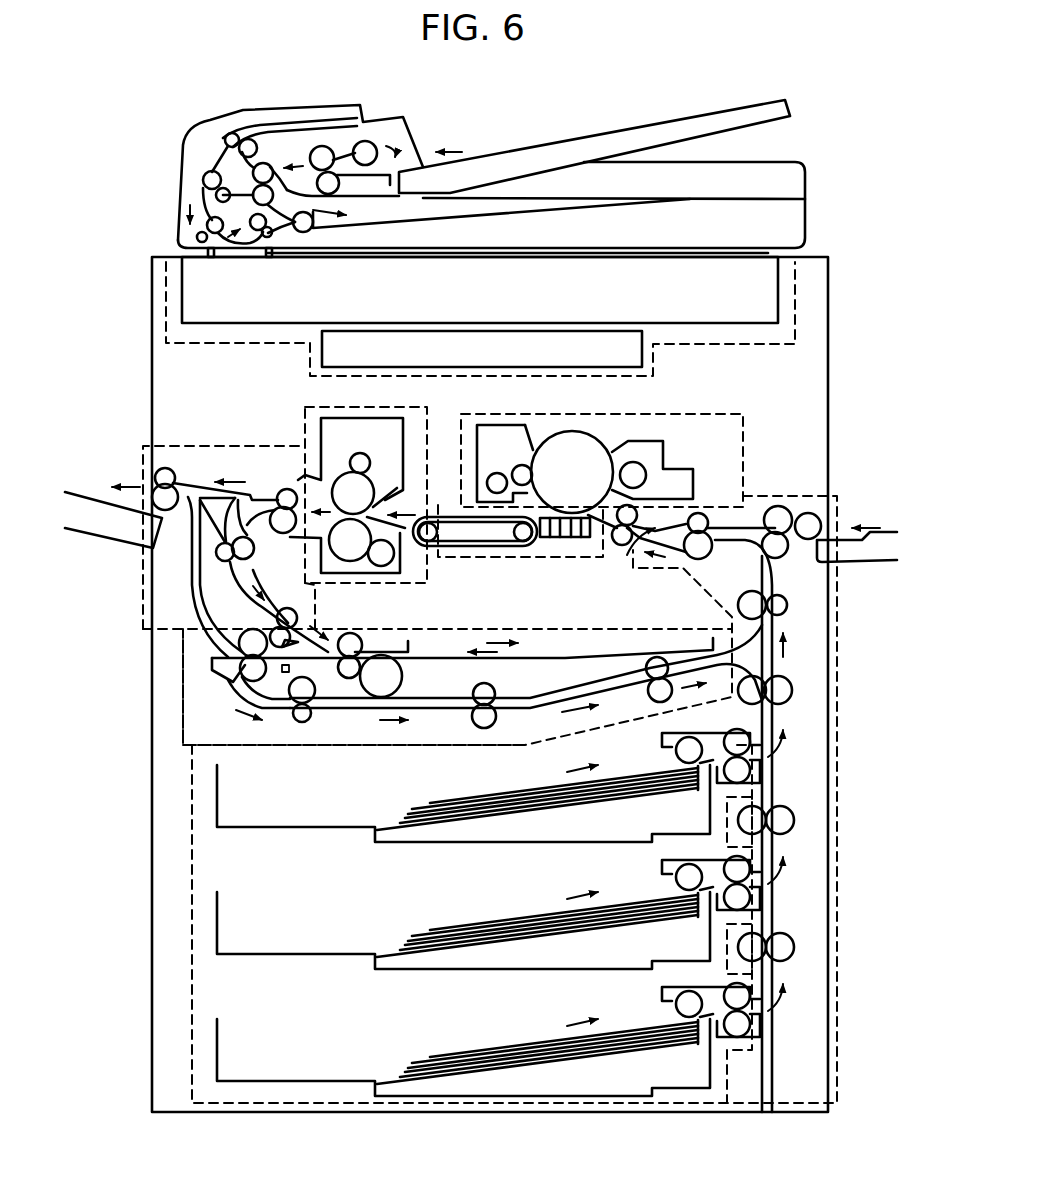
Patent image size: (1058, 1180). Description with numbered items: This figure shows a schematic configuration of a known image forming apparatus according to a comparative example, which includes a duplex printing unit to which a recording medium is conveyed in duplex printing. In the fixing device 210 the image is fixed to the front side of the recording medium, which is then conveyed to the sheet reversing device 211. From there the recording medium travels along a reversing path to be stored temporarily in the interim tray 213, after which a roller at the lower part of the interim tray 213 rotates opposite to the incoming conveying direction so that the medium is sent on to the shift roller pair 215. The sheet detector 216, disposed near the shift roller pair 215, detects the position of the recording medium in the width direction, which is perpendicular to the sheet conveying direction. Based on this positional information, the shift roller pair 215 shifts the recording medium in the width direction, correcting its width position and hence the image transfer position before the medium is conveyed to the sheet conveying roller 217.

The fixing device 210 is at (305, 423).
The sheet reversing device 211 is at (183, 700).
The interim tray 213 is at (548, 652).
The shift roller pair 215 is at (228, 638).
The sheet detector 216 is at (285, 673).
The sheet conveying roller 217 is at (477, 727).